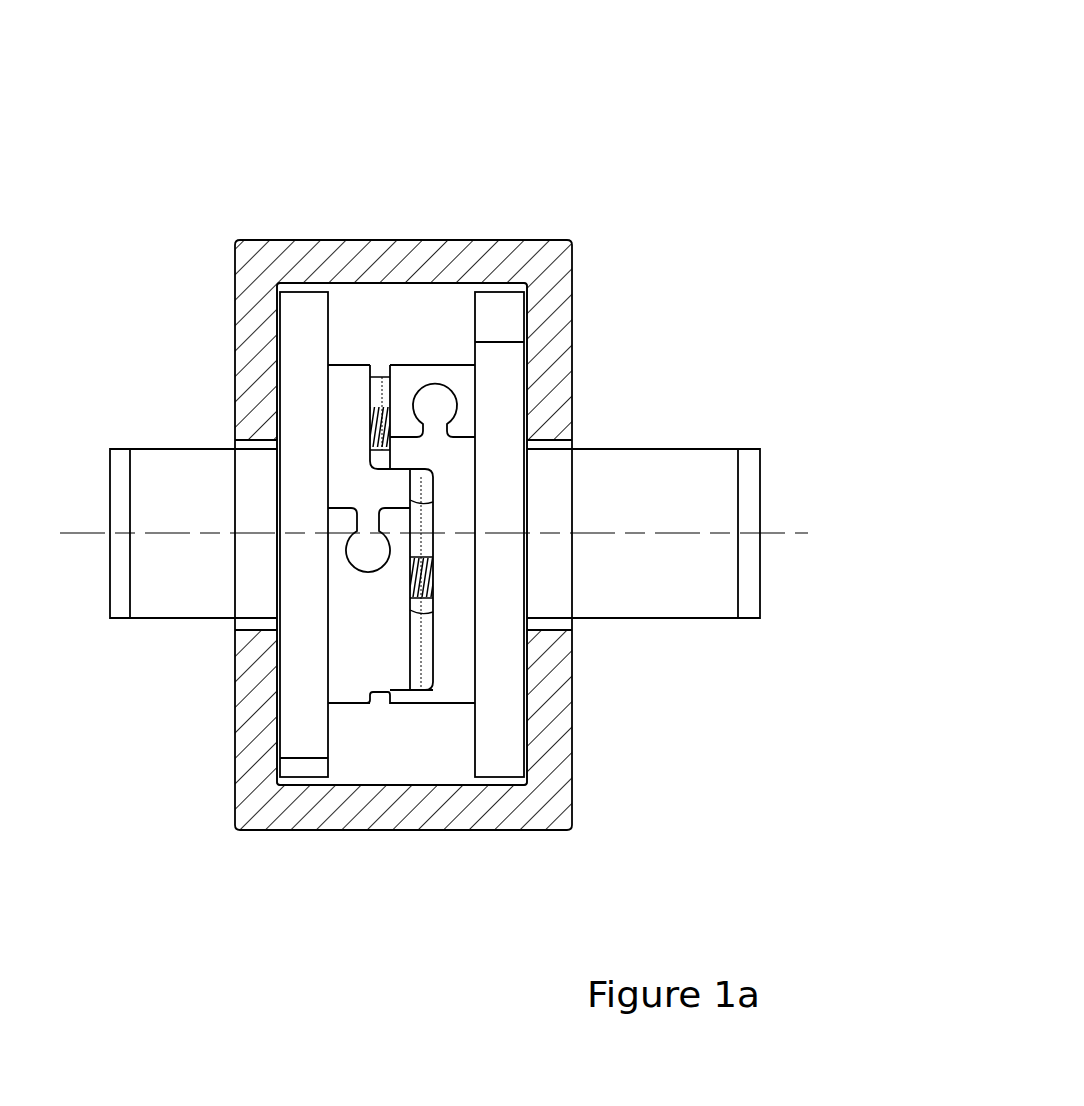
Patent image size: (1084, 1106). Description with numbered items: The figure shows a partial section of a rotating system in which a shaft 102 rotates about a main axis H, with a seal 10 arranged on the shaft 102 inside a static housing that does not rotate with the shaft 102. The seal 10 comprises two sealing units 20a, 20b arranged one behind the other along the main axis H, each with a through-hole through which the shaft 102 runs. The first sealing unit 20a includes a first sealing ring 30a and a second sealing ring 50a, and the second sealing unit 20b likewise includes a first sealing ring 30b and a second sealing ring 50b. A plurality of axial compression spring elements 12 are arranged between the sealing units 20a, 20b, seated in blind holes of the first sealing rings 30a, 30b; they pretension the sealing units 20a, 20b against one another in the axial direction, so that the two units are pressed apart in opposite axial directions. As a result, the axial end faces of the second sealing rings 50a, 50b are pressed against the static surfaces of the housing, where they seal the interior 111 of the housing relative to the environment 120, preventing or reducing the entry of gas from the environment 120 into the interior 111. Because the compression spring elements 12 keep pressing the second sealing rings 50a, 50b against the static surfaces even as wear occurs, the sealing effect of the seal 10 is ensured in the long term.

The seal 10 is at (363, 330).
The axial compression spring elements 12 is at (375, 427).
The first sealing unit 20a is at (340, 715).
The second sealing unit 20b is at (463, 717).
The first sealing ring 30a is at (347, 658).
The first sealing ring 30b is at (458, 673).
The second sealing ring 50a is at (302, 308).
The second sealing ring 50b is at (487, 303).
The shaft 102 is at (687, 470).
The interior 111 is at (427, 313).
The environment 120 is at (765, 265).
The main axis H is at (188, 533).